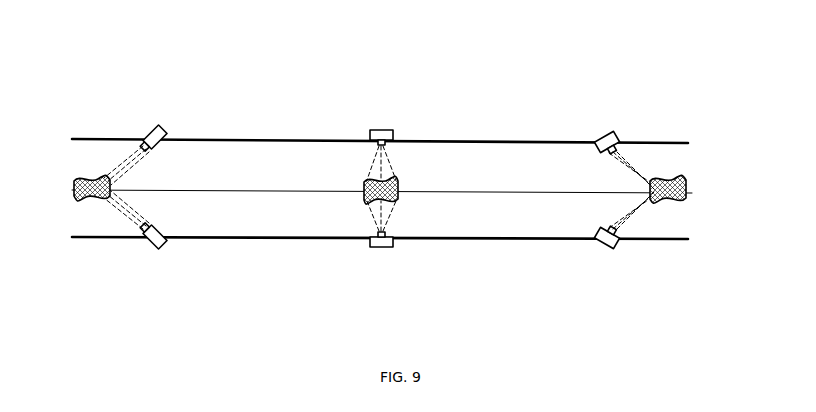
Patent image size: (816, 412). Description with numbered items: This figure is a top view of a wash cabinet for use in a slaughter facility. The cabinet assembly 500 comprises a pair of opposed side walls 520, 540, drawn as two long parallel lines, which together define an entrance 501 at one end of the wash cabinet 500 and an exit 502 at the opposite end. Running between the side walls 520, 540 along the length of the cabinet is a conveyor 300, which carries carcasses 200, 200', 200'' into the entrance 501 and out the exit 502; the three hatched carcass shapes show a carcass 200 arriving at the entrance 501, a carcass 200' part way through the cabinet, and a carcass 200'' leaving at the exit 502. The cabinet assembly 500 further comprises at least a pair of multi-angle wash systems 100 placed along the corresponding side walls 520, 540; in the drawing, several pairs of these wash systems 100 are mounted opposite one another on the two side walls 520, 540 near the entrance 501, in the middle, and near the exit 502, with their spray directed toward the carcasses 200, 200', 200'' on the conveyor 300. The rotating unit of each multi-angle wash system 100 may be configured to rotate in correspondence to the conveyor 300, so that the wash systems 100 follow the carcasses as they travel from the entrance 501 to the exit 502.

The multi-angle wash system 100 is at (160, 127).
The carcass 200 is at (91, 201).
The carcass 200' is at (355, 202).
The carcass 200'' is at (679, 203).
The conveyor 300 is at (468, 188).
The cabinet assembly 500 is at (663, 65).
The entrance 501 is at (62, 177).
The exit 502 is at (702, 182).
The side wall 520 is at (238, 134).
The side wall 540 is at (253, 244).